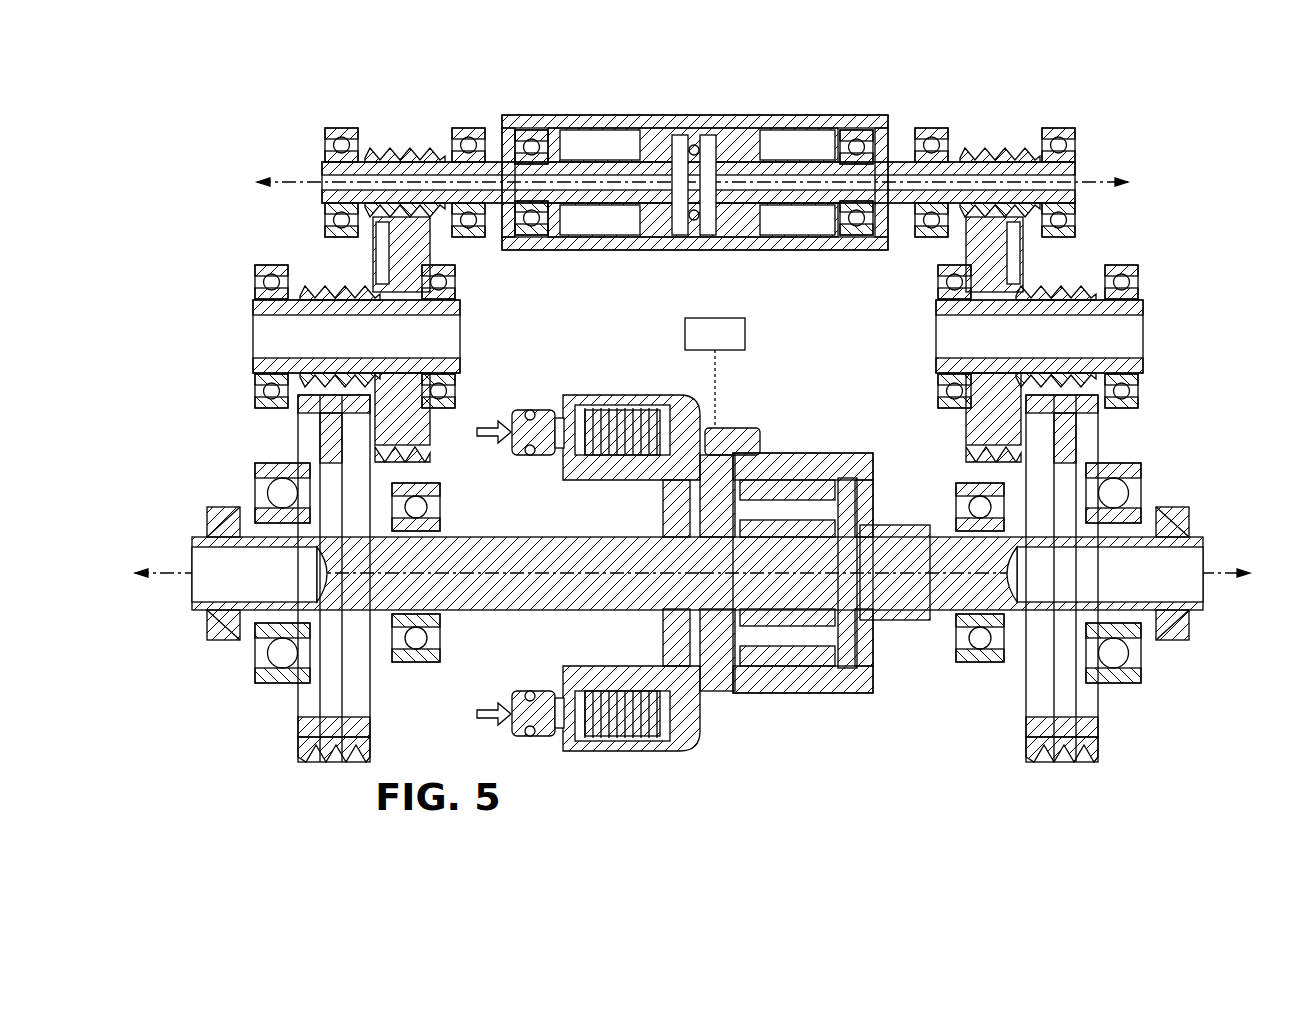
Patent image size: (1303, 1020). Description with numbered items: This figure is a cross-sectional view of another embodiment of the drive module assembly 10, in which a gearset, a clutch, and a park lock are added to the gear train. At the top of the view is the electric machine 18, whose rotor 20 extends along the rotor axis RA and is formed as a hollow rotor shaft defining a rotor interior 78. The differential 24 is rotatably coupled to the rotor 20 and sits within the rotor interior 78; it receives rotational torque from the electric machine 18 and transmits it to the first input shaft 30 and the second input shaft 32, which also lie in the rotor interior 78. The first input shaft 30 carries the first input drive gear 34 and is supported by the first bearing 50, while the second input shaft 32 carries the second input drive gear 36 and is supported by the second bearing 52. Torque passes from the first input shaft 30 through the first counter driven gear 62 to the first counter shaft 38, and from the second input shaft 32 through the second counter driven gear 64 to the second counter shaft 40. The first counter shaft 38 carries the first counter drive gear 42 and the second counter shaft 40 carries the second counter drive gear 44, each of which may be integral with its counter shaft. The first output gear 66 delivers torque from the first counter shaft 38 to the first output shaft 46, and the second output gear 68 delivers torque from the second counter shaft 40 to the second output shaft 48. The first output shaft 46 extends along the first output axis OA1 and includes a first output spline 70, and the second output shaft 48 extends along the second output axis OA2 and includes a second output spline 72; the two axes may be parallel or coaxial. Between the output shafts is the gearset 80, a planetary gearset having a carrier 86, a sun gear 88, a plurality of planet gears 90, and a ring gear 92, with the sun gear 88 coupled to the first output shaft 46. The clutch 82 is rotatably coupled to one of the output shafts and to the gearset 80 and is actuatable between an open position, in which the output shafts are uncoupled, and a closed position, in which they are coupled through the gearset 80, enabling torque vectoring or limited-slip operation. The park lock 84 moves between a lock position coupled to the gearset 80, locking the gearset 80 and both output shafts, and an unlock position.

The drive module assembly 10 is at (182, 112).
The electric machine 18 is at (468, 90).
The rotor 20 is at (790, 118).
The differential 24 is at (690, 128).
The first input shaft 30 is at (478, 150).
The second input shaft 32 is at (930, 140).
The first input drive gear 34 is at (388, 150).
The second input drive gear 36 is at (1000, 150).
The first counter shaft 38 is at (253, 330).
The second counter shaft 40 is at (1143, 312).
The first counter drive gear 42 is at (318, 412).
The second counter drive gear 44 is at (1143, 370).
The first output shaft 46 is at (215, 617).
The second output shaft 48 is at (1140, 625).
The first bearing 50 is at (340, 128).
The second bearing 52 is at (1057, 128).
The first counter driven gear 62 is at (385, 250).
The second counter driven gear 64 is at (1010, 250).
The first output gear 66 is at (332, 430).
The second output gear 68 is at (1098, 432).
The first output spline 70 is at (215, 595).
The second output spline 72 is at (1185, 595).
The rotor interior 78 is at (600, 130).
The gearset 80 is at (879, 706).
The clutch 82 is at (598, 745).
The park lock 84 is at (715, 373).
The carrier 86 is at (745, 428).
The sun gear 88 is at (850, 545).
The planet gears 90 is at (790, 650).
The ring gear 92 is at (800, 453).
The rotor axis RA is at (1092, 180).
The first output axis OA1 is at (158, 568).
The second output axis OA2 is at (1235, 568).